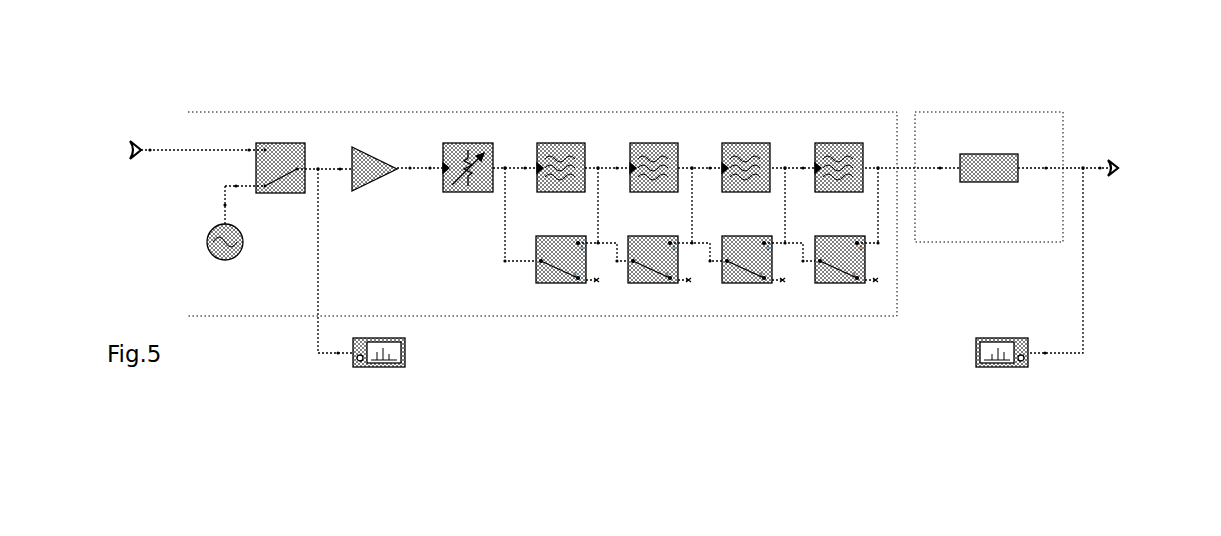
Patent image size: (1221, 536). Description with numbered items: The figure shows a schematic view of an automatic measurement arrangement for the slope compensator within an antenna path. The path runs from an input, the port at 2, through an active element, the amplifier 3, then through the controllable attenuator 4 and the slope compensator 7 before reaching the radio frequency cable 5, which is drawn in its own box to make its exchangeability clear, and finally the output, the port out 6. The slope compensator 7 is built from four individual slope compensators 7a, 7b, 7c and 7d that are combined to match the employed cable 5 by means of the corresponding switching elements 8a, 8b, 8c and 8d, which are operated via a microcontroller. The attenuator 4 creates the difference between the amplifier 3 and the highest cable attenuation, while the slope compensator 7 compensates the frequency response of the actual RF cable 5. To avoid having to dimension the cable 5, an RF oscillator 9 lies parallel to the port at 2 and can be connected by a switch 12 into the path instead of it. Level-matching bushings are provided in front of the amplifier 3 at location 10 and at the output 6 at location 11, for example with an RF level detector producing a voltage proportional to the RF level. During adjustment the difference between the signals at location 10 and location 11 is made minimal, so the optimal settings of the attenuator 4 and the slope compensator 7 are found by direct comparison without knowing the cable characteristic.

The port in 2 is at (146, 143).
The switch 12 is at (296, 143).
The RF oscillator 9 is at (208, 243).
The amplifier 3 is at (378, 152).
The controllable attenuator 4 is at (474, 143).
The slope compensator 7 is at (691, 98).
The slope compensator 7a is at (568, 143).
The slope compensator 7b is at (630, 162).
The slope compensator 7c is at (750, 143).
The slope compensator 7d is at (815, 162).
The switching element 8a is at (532, 268).
The switching element 8b is at (624, 268).
The switching element 8c is at (718, 268).
The switching element 8d is at (811, 268).
The RF cable 5 is at (999, 154).
The port out 6 is at (1113, 165).
The location 10 is at (395, 362).
The location 11 is at (977, 350).